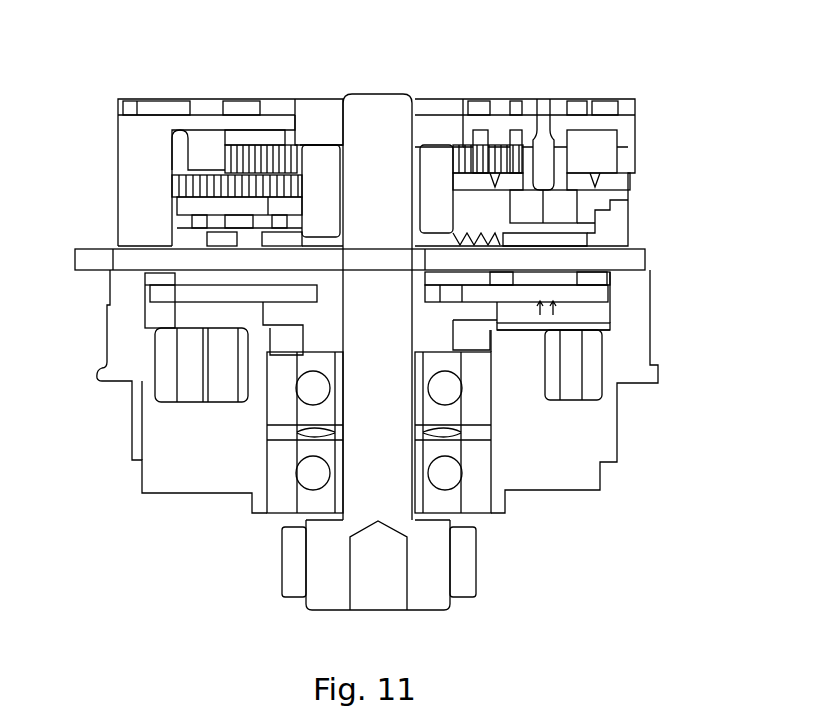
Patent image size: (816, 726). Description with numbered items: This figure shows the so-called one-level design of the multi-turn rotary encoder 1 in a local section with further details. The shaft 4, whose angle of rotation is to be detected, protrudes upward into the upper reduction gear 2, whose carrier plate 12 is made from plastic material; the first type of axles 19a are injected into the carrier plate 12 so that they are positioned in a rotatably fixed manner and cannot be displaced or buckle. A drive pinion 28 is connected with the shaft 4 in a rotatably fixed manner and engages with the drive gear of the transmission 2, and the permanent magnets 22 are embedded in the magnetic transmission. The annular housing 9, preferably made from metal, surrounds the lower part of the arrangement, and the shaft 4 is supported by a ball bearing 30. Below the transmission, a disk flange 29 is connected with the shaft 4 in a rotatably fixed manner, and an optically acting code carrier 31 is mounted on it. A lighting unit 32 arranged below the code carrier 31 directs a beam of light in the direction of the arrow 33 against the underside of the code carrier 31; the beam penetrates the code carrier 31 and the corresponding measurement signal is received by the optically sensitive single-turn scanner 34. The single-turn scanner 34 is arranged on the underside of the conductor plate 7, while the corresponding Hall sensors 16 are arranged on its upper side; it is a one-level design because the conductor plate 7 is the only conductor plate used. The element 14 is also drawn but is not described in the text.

The multi-turn rotary encoder 1 is at (327, 82).
The shaft 4 is at (376, 100).
The reduction gear 2 is at (283, 160).
The drive pinion 28 is at (433, 150).
The carrier plate 12 is at (473, 140).
The first type of axles 19a is at (543, 100).
The cover 14 is at (583, 173).
The permanent magnets 22 is at (628, 200).
The Hall sensors 16 is at (590, 225).
The conductor plate 7 is at (625, 262).
The single-turn scanner 34 is at (600, 277).
The code carrier 31 is at (600, 293).
The lighting unit 32 is at (603, 318).
The arrow 33 is at (557, 312).
The housing 9 is at (600, 445).
The ball bearing 30 is at (480, 474).
The disk flange 29 is at (288, 311).